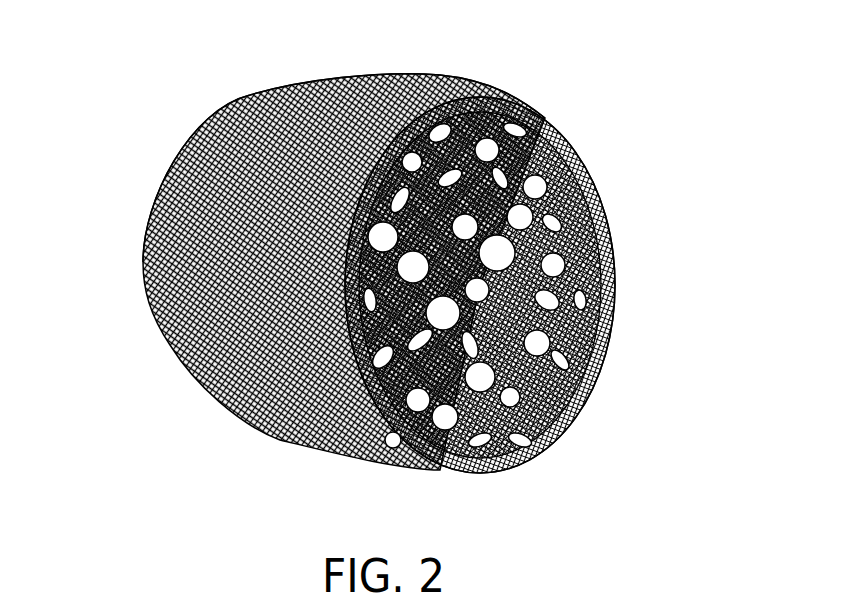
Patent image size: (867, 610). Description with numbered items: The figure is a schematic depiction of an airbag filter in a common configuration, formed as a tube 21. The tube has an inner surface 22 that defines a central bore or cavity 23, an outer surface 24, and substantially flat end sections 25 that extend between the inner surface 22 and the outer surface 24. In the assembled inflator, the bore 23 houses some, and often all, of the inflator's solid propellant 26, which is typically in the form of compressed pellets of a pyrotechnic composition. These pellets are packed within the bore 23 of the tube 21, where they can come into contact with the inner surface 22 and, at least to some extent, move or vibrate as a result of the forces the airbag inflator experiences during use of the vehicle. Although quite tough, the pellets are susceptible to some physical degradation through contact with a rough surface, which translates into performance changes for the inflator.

The tube 21 is at (132, 394).
The inner surface 22 is at (590, 248).
The central bore 23 is at (629, 442).
The outer surface 24 is at (348, 88).
The end section 25 is at (578, 157).
The solid propellant 26 is at (480, 377).